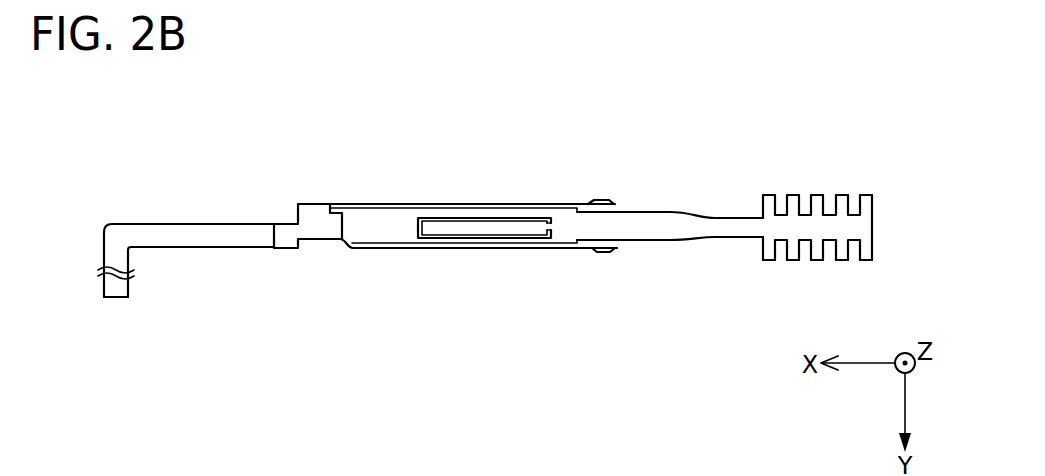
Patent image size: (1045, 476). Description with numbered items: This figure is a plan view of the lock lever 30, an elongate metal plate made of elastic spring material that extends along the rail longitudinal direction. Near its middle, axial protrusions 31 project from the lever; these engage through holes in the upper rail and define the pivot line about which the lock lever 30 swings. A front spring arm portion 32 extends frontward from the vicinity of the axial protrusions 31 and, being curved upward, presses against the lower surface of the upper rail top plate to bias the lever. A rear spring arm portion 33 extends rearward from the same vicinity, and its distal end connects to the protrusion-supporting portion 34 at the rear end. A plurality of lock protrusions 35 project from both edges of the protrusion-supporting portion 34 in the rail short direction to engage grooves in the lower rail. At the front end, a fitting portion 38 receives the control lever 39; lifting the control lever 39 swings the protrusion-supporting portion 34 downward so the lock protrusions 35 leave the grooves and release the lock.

The lock lever 30 is at (392, 198).
The axial protrusions 31 is at (600, 203).
The front spring arm portion 32 is at (456, 228).
The rear spring arm portion 33 is at (722, 218).
The protrusion-supporting portion 34 is at (866, 228).
The lock protrusions 35 is at (769, 195).
The fitting portion 38 is at (287, 230).
The control lever 39 is at (150, 228).